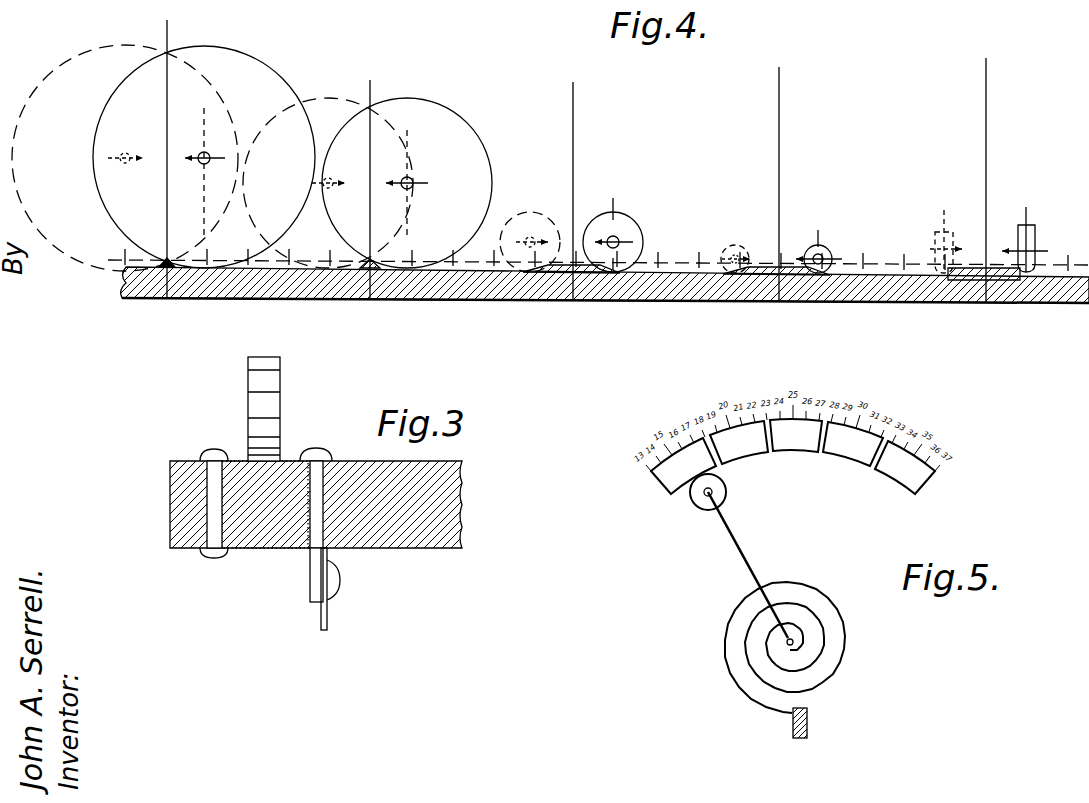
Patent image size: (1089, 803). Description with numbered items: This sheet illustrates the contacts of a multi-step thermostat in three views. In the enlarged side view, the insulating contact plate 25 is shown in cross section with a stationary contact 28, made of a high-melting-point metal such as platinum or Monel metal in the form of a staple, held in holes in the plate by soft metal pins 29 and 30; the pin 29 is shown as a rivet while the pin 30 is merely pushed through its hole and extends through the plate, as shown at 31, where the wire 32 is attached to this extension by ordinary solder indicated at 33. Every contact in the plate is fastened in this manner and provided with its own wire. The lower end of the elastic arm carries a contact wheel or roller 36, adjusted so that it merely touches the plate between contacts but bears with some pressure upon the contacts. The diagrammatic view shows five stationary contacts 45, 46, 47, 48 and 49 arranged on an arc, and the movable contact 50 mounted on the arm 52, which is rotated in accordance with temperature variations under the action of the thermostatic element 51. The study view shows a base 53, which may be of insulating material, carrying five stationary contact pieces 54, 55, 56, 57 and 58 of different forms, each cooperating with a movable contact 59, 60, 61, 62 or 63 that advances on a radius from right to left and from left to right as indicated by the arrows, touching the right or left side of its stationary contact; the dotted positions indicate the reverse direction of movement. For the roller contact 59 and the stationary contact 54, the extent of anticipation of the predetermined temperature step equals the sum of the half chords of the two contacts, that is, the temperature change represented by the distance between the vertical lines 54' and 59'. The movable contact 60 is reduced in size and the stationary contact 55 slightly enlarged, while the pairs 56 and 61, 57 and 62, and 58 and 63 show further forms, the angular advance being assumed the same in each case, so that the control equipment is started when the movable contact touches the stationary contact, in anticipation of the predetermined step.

In FIG. 3, the contact plate 25 is at (455, 508).
In FIG. 3, the stationary contact 28 is at (288, 459).
In FIG. 3, the pin 29 is at (216, 450).
In FIG. 3, the pin 30 is at (325, 450).
In FIG. 3, the extension of the pin 31 is at (313, 560).
In FIG. 3, the wire 32 is at (327, 618).
In FIG. 3, the solder 33 is at (338, 580).
In FIG. 3, the contact wheel or roller 36 is at (258, 382).
In FIG. 5, the stationary contact 45 is at (667, 483).
In FIG. 5, the stationary contact 46 is at (740, 456).
In FIG. 5, the stationary contact 47 is at (797, 450).
In FIG. 5, the stationary contact 48 is at (860, 460).
In FIG. 5, the stationary contact 49 is at (905, 485).
In FIG. 5, the movable contact 50 is at (705, 510).
In FIG. 5, the thermostatic element 51 is at (826, 638).
In FIG. 5, the arm 52 is at (748, 553).
In FIG. 4, the base 53 is at (640, 300).
In FIG. 4, the stationary contact 54 is at (157, 172).
In FIG. 4, the vertical line 54' is at (186, 174).
In FIG. 4, the stationary contact 55 is at (357, 298).
In FIG. 4, the stationary contact 56 is at (561, 300).
In FIG. 4, the stationary contact 57 is at (783, 302).
In FIG. 4, the stationary contact 58 is at (985, 303).
In FIG. 4, the movable contact 59 is at (173, 155).
In FIG. 4, the vertical line 59' is at (226, 125).
In FIG. 4, the movable contact 60 is at (343, 98).
In FIG. 4, the movable contact 61 is at (536, 208).
In FIG. 4, the movable contact 62 is at (735, 244).
In FIG. 4, the movable contact 63 is at (940, 228).